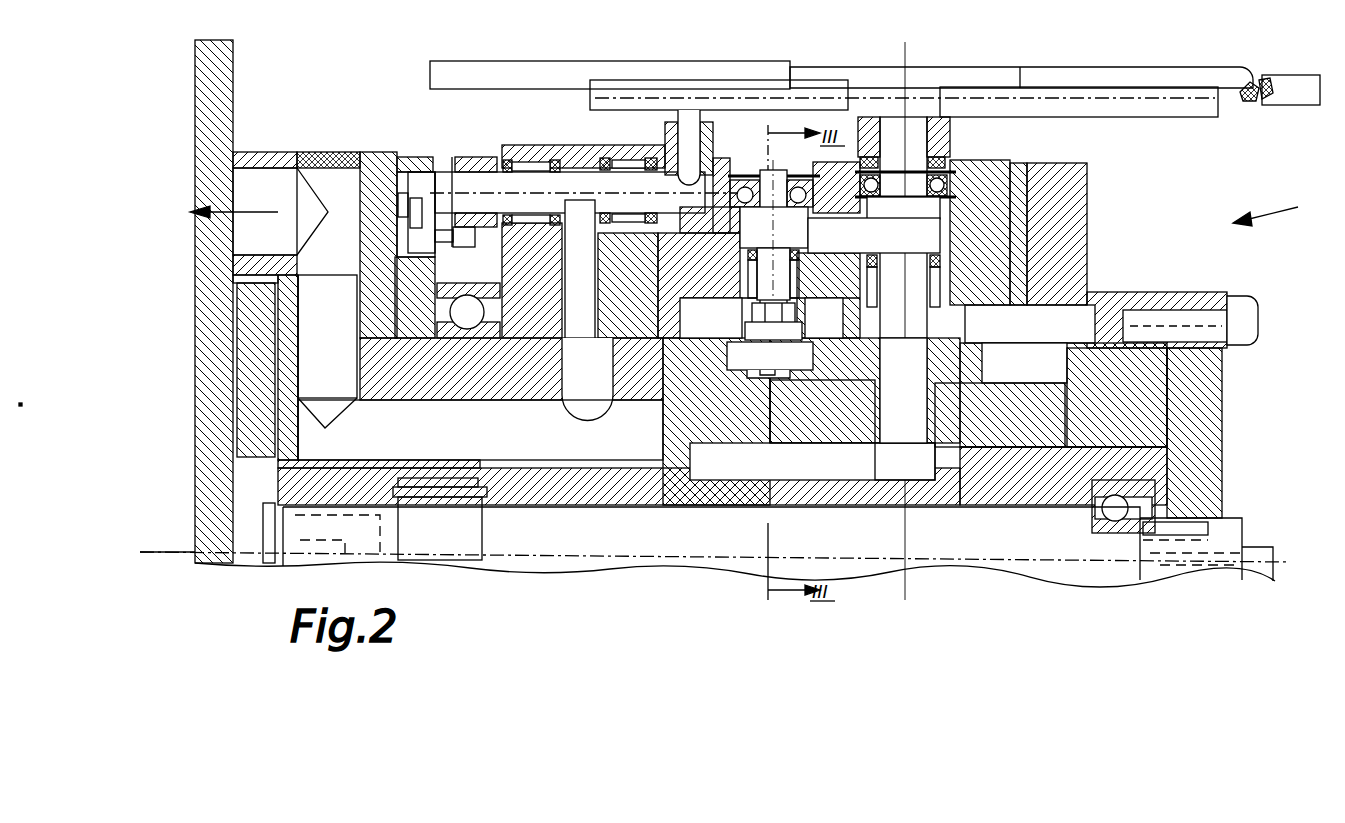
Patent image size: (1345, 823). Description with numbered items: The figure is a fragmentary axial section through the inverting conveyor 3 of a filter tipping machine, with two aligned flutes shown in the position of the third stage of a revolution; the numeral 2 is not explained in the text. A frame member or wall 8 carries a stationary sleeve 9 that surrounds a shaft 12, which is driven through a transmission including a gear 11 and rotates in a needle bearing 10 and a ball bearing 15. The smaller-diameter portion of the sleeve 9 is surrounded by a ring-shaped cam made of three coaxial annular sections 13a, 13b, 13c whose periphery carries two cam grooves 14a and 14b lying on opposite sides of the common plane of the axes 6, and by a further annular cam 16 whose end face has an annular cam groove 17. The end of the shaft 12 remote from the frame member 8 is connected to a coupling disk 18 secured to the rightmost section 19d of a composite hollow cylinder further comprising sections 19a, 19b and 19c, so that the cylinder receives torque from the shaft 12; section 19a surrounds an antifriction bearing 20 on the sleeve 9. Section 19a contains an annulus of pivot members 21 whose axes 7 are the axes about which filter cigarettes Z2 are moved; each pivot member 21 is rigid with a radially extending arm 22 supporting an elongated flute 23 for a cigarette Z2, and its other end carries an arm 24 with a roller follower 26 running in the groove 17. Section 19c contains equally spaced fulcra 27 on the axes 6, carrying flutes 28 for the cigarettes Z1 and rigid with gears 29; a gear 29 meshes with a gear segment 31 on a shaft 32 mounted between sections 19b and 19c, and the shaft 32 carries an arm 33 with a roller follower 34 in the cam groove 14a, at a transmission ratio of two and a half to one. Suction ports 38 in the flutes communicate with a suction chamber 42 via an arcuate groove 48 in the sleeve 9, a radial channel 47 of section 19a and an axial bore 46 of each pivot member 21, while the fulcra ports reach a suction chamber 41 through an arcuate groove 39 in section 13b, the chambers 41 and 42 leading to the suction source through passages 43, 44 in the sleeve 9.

The machine tool base 2 is at (170, 552).
The inverting conveyor 3 is at (1273, 211).
The axes 6 is at (908, 52).
The axes 7 is at (472, 160).
The frame member or wall 8 is at (205, 88).
The sleeve 9 is at (272, 152).
The needle bearing 10 is at (432, 500).
The gear 11 is at (242, 342).
The shaft 12 is at (588, 548).
The annular section 13a is at (745, 447).
The annular section 13b is at (845, 432).
The annular section 13c is at (1050, 422).
The cam groove 14a is at (800, 442).
The cam groove 14b is at (1005, 422).
The ball bearing 15 is at (1116, 530).
The annular cam 16 is at (375, 155).
The annular cam groove 17 is at (404, 170).
The coupling disk 18 is at (1212, 472).
The section of cylinder 19a is at (530, 155).
The section of cylinder 19b is at (750, 132).
The section of cylinder 19c is at (1000, 163).
The section of cylinder 19d is at (1080, 180).
The antifriction bearing 20 is at (456, 345).
The pivot members 21 is at (490, 190).
The lever or arm 22 is at (666, 128).
The flute 23 is at (610, 100).
The lever or arm 24 is at (437, 248).
The roller follower 26 is at (427, 230).
The fulcra 27 is at (886, 130).
The flute 28 is at (1150, 112).
The gear 29 is at (940, 228).
The gear segment 31 is at (945, 253).
The shaft 32 is at (772, 200).
The lever or arm 33 is at (745, 316).
The roller follower 34 is at (802, 352).
The suction port 38 is at (682, 123).
The arcuate groove 39 is at (910, 432).
The suction chamber 41 is at (875, 470).
The second suction chamber 42 is at (528, 441).
The passage 43 is at (332, 350).
The passage 44 is at (278, 200).
The axial channel or bore 46 is at (548, 175).
The radial channel 47 is at (592, 282).
The arcuate groove 48 is at (600, 392).
The cigarette Z1 is at (1122, 67).
The filter cigarette Z2 is at (712, 61).